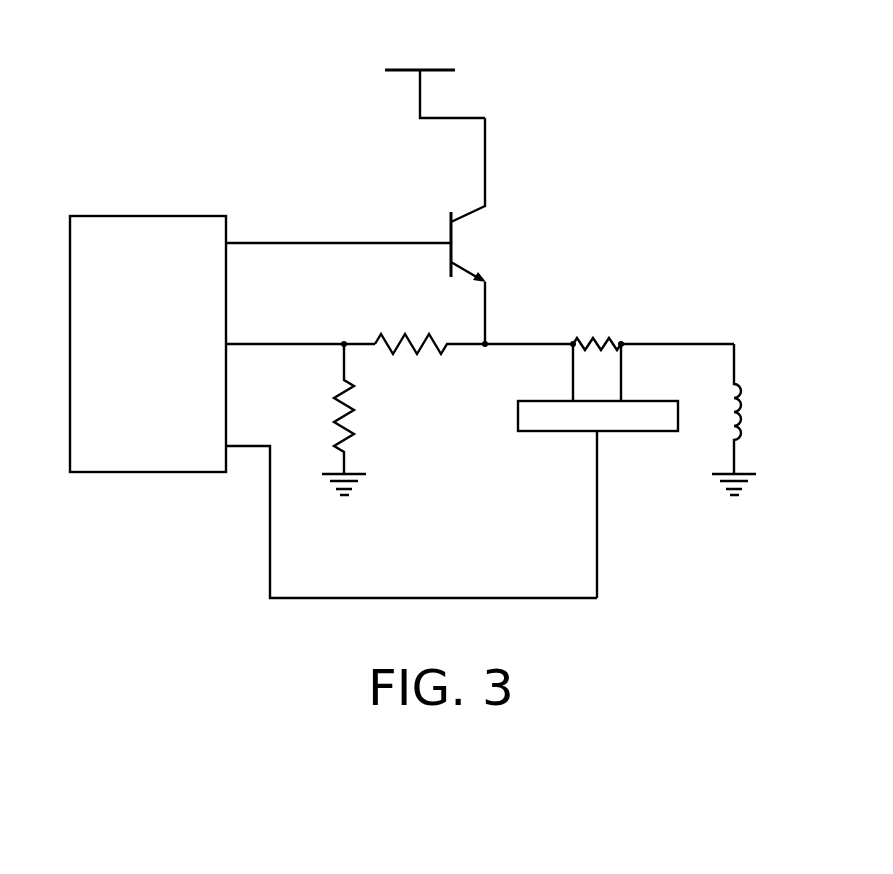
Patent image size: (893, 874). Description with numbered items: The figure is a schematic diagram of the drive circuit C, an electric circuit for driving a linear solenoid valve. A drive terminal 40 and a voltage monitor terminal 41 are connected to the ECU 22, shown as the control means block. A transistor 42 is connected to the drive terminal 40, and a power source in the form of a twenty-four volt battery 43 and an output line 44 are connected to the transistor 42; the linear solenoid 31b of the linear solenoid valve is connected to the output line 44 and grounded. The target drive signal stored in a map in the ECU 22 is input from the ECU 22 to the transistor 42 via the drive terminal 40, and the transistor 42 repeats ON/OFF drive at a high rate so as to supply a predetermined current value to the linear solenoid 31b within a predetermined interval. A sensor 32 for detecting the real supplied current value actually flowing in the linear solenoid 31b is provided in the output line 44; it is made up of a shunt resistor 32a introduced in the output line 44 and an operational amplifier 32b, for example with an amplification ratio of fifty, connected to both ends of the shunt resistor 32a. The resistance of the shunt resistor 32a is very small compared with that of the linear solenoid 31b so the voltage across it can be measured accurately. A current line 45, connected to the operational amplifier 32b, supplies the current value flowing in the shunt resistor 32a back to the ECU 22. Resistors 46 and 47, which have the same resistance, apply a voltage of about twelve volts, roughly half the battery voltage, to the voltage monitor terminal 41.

The ECU 22 is at (138, 216).
The drive terminal 40 is at (318, 243).
The transistor 42 is at (450, 212).
The power source (battery 24 V) 43 is at (440, 72).
The voltage monitor terminal 41 is at (283, 343).
The resistor 47 is at (408, 350).
The resistor 46 is at (354, 427).
The output line 44 is at (516, 343).
The shunt resistor 32a is at (595, 341).
The sensor 32 is at (566, 378).
The operational amplifier 32b is at (572, 432).
The linear solenoid 31b is at (738, 385).
The current line 45 is at (418, 598).
The drive circuit C is at (575, 245).